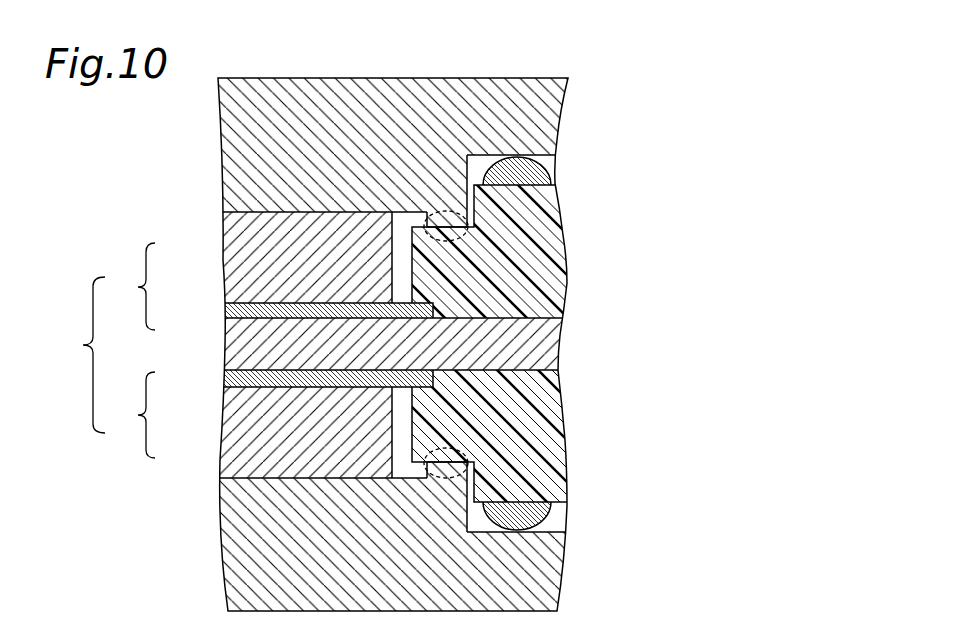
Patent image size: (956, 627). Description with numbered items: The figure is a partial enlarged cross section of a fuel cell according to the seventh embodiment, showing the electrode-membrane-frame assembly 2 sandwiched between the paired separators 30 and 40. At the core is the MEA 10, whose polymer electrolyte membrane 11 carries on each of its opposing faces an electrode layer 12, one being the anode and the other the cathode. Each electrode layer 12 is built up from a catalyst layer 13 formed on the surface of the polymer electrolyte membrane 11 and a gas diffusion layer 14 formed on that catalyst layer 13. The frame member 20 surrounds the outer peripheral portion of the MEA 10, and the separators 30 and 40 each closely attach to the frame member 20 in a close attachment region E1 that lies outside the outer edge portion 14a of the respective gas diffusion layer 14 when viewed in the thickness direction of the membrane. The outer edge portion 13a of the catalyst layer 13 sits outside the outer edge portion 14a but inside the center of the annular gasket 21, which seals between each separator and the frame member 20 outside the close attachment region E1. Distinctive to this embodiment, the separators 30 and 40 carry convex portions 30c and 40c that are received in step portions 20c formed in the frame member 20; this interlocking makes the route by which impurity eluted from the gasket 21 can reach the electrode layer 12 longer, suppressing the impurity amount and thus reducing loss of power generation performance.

The electrode-membrane-frame assembly 2 is at (634, 337).
The MEA 10 is at (315, 345).
The polymer electrolyte membrane 11 is at (228, 347).
The electrode layer 12 is at (128, 350).
The catalyst layer 13 is at (226, 313).
The gas diffusion layer 14 is at (226, 261).
The frame member 20 is at (553, 229).
The gasket 21 is at (530, 193).
The separator 30 is at (548, 124).
The separator 40 is at (548, 559).
The outer edge portion of the gas diffusion layer 14a is at (455, 266).
The outer edge portion of the catalyst layer 13a is at (436, 312).
The step portion 20c is at (468, 220).
The convex portion 30c is at (460, 217).
The convex portion 40c is at (460, 476).
The close attachment region E1 is at (453, 213).